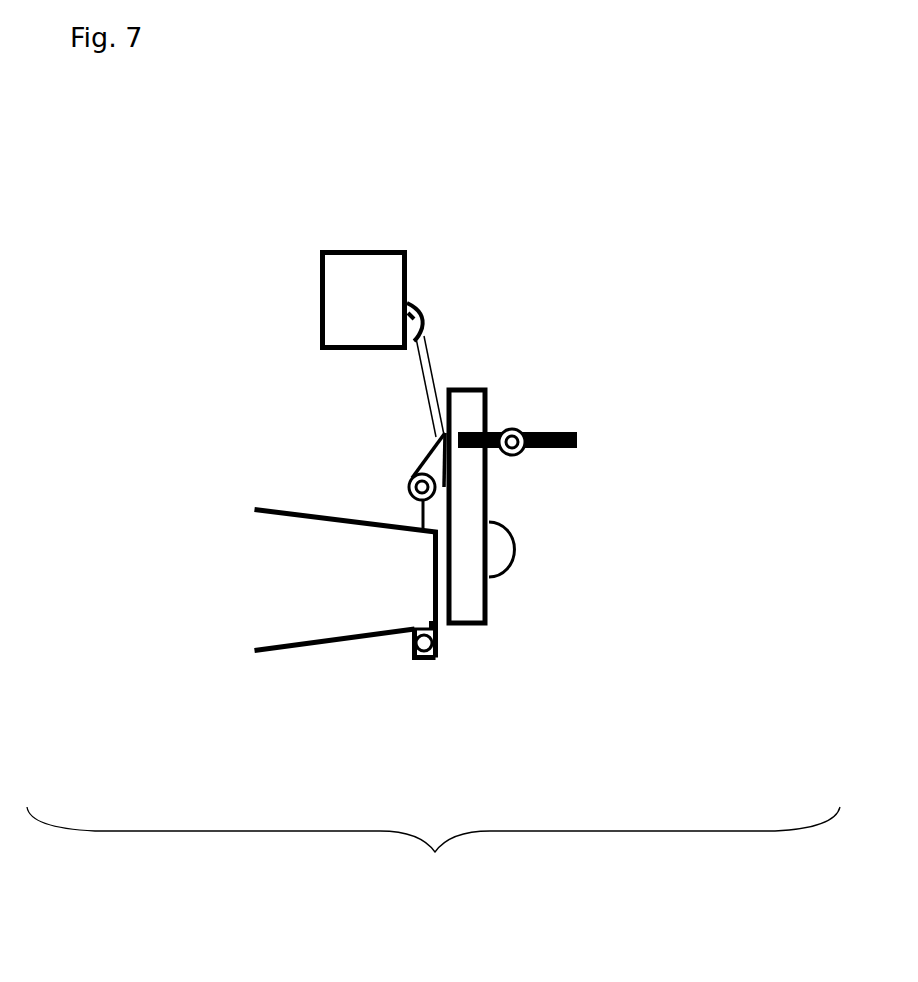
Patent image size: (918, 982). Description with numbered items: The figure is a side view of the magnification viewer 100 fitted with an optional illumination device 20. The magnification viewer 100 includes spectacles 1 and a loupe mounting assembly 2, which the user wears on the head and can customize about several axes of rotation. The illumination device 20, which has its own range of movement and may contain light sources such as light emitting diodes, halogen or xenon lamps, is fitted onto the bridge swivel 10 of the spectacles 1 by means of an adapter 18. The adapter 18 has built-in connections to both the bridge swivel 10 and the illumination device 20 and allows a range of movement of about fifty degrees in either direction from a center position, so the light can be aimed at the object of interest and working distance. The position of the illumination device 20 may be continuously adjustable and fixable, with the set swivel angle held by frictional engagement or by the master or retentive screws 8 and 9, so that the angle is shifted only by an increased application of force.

The spectacles 1 is at (528, 522).
The loupe mounting assembly 2 is at (313, 468).
The retentive screw 8 is at (448, 633).
The retentive screw 9 is at (423, 305).
The bridge swivel 10 is at (430, 462).
The adapter 18 is at (425, 382).
The illumination device 20 is at (395, 277).
The magnification viewer 100 is at (433, 843).